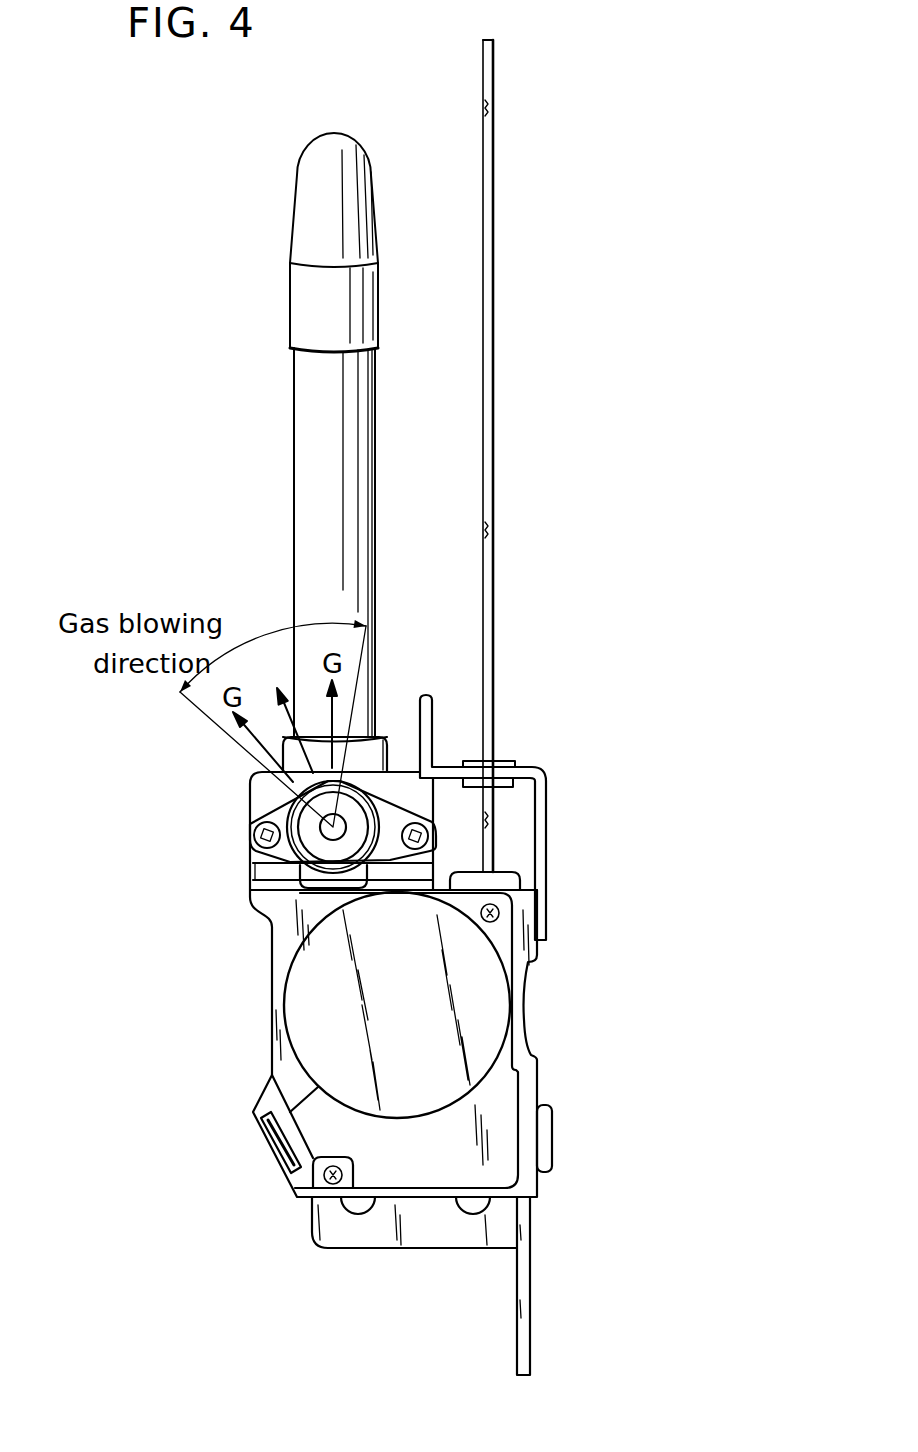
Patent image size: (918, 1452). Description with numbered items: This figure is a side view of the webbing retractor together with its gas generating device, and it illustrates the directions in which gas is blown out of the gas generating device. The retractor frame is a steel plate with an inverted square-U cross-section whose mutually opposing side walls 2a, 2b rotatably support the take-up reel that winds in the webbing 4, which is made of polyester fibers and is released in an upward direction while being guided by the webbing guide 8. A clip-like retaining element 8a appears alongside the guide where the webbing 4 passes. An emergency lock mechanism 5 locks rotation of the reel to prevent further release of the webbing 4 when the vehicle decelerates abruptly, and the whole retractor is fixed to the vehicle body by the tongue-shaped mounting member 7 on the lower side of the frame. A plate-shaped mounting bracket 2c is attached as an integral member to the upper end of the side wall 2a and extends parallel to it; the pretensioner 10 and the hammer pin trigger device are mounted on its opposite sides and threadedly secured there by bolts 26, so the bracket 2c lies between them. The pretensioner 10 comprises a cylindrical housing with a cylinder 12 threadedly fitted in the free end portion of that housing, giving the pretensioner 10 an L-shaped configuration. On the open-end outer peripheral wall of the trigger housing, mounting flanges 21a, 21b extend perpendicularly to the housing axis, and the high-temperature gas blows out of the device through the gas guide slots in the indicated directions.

The pretensioner 10 is at (265, 508).
The cylinder 12 is at (308, 393).
The webbing 4 is at (490, 416).
The clip plate 8a is at (500, 762).
The webbing guide 8 is at (543, 843).
The mounting bracket 2c is at (267, 795).
The mounting flange 21a is at (252, 858).
The mounting flange 21b is at (400, 812).
The bolt 26 is at (253, 825).
The side wall 2a is at (287, 943).
The emergency lock mechanism 5 is at (492, 1003).
The side wall 2b is at (433, 1232).
The mounting member 7 is at (532, 1322).